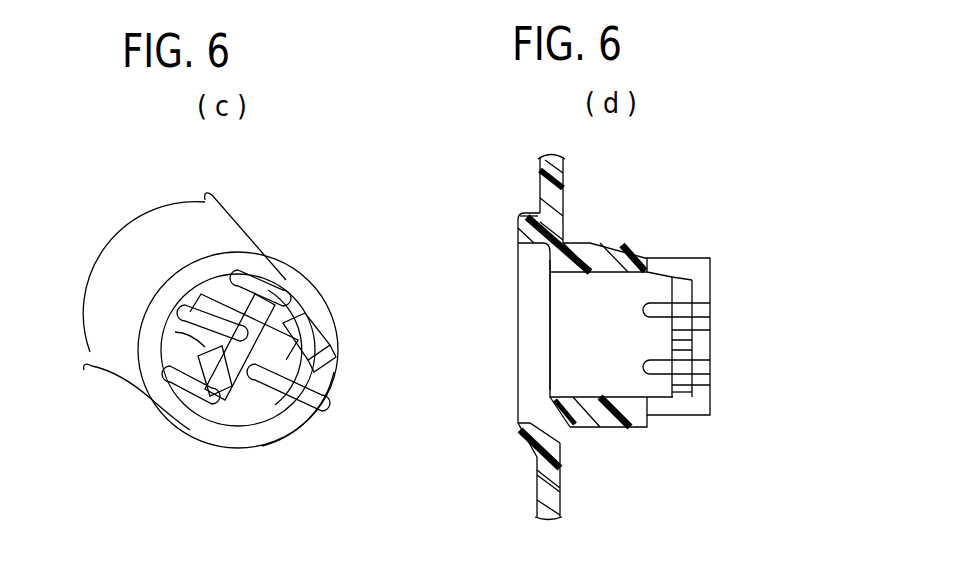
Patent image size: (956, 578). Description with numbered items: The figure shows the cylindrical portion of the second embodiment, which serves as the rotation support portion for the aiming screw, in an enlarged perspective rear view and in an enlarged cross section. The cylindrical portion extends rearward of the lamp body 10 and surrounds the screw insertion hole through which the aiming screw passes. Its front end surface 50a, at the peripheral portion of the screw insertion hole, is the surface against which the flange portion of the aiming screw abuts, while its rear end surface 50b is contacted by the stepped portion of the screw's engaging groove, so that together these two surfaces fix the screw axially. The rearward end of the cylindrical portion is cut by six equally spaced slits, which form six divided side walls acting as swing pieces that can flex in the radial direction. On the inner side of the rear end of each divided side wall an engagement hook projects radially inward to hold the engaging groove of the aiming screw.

The lamp body 10 is at (540, 180).
The front end surface 50a is at (520, 217).
The rear end surface 50b is at (697, 268).